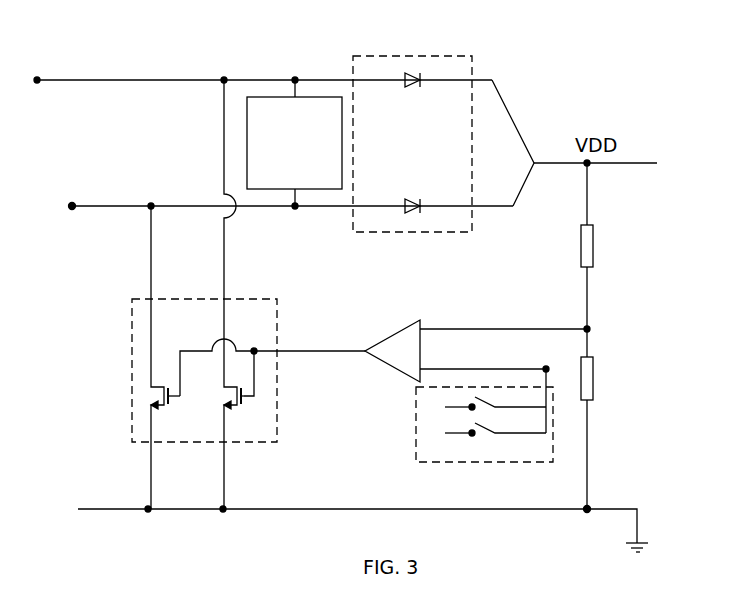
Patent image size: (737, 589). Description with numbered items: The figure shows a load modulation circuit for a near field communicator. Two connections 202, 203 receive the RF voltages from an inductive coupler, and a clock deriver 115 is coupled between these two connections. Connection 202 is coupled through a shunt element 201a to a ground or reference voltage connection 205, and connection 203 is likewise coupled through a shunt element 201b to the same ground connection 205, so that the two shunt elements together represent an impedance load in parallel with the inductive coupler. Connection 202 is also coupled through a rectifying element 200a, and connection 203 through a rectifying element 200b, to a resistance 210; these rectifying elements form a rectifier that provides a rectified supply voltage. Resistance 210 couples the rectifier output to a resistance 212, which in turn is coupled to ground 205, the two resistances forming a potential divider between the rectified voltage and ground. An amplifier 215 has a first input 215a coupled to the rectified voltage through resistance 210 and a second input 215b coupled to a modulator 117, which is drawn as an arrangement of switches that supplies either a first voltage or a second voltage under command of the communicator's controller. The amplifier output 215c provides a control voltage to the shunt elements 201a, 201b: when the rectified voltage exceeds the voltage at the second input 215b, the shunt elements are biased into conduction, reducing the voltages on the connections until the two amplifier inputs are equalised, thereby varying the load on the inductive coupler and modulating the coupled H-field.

The connection 203 is at (263, 85).
The connection 202 is at (281, 208).
The clock deriver 115 is at (294, 143).
The rectifying element 200a is at (412, 132).
The rectifying element 200b is at (414, 93).
The resistance 210 is at (607, 277).
The resistance 212 is at (607, 419).
The amplifier 215 is at (392, 351).
The first amplifier input 215a is at (503, 320).
The second amplifier input 215b is at (484, 360).
The amplifier output 215c is at (309, 342).
The modulator 117 is at (484, 415).
The shunt element 201a is at (177, 357).
The shunt element 201b is at (250, 294).
The ground or reference voltage connection 205 is at (363, 519).